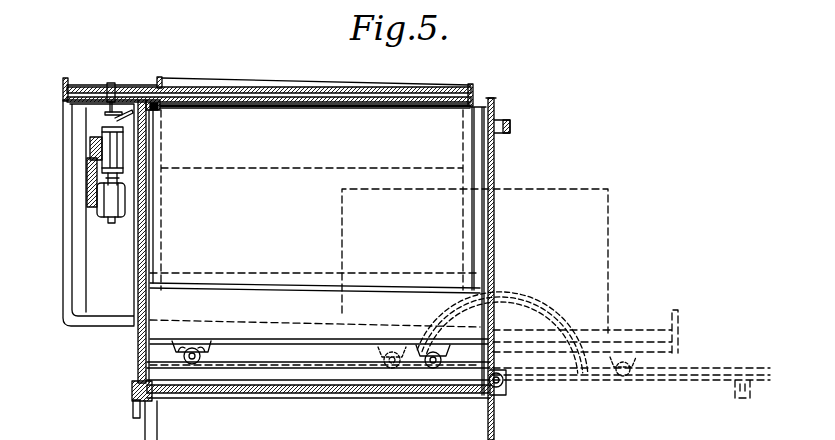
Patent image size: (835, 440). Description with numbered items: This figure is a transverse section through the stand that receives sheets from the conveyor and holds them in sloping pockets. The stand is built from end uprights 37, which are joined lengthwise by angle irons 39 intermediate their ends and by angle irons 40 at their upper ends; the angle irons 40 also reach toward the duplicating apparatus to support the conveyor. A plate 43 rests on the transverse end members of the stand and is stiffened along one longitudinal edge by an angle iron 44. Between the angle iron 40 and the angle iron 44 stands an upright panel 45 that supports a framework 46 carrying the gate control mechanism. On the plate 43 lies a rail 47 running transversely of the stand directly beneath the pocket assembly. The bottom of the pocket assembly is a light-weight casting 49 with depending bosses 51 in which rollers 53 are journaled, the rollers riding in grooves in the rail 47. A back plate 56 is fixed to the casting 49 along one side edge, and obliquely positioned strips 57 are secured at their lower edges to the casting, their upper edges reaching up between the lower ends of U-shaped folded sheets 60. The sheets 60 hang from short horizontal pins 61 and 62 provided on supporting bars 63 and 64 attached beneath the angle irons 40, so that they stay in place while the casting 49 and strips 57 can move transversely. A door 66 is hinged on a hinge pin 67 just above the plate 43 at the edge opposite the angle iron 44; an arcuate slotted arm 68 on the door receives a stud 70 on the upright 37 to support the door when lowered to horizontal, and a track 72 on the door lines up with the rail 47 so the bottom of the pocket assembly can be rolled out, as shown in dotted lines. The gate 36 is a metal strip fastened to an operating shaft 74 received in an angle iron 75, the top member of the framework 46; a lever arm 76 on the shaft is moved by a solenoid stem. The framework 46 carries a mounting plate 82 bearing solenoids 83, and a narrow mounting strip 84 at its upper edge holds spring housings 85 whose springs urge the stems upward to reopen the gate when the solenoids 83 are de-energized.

The gate 36 is at (270, 83).
The end upright 37 is at (145, 433).
The angle iron 39 is at (135, 408).
The angle iron 40 is at (160, 82).
The plate 43 is at (365, 398).
The angle iron 44 is at (132, 385).
The upright panel 45 is at (138, 271).
The framework 46 is at (77, 240).
The rail 47 is at (302, 380).
The casting 49 is at (300, 313).
The depending boss 51 is at (168, 346).
The roller 53 is at (205, 343).
The back plate 56 is at (148, 300).
The strip 57 is at (248, 303).
The folded sheet 60 is at (457, 188).
The pin 61 is at (470, 113).
The pin 62 is at (157, 105).
The supporting bar 63 is at (512, 120).
The supporting bar 64 is at (152, 110).
The door 66 is at (492, 266).
The hinge pin 67 is at (505, 388).
The arcuate slotted arm 68 is at (447, 313).
The stud 70 is at (505, 300).
The track 72 is at (483, 218).
The operating shaft 74 is at (127, 88).
The angle iron 75 is at (67, 93).
The lever arm 76 is at (111, 83).
The mounting plate 82 is at (92, 155).
The solenoid 83 is at (105, 197).
The mounting strip 84 is at (92, 143).
The spring housing 85 is at (121, 163).